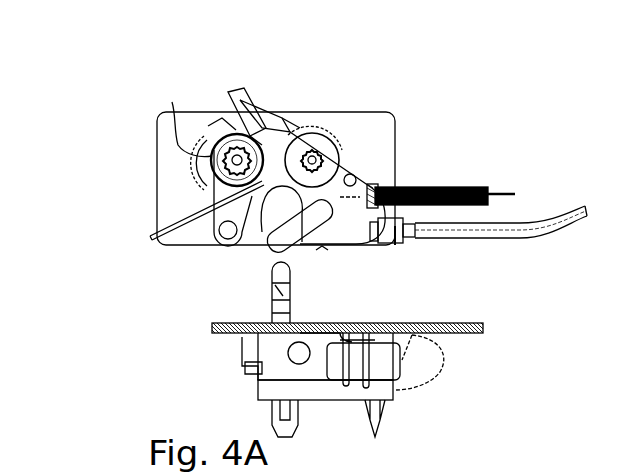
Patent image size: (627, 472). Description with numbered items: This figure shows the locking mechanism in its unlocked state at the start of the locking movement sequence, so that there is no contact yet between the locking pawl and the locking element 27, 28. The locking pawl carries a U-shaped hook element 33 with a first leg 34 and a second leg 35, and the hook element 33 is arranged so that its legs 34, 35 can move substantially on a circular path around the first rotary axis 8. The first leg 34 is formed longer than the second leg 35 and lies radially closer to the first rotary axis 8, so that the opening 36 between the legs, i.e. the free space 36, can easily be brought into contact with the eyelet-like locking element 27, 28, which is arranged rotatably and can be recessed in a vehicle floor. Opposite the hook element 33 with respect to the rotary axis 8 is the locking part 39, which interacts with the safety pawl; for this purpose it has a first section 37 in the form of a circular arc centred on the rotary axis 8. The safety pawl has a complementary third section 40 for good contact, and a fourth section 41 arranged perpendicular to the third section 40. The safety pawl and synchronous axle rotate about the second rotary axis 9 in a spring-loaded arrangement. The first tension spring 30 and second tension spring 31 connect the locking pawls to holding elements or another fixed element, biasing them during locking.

The first rotary axis 8 is at (296, 122).
The second rotary axis 9 is at (172, 122).
The first locking element 27 is at (201, 295).
The second locking element 28 is at (279, 292).
The first tension spring 30 is at (477, 172).
The second tension spring 31 is at (450, 186).
The U-shaped hook element 33 is at (241, 254).
The first leg 34 is at (332, 130).
The second leg 35 is at (322, 248).
The opening 36 is at (302, 240).
The first section 37 is at (196, 133).
The locking part 39 is at (278, 120).
The third section 40 is at (220, 118).
The fourth section 41 is at (229, 94).